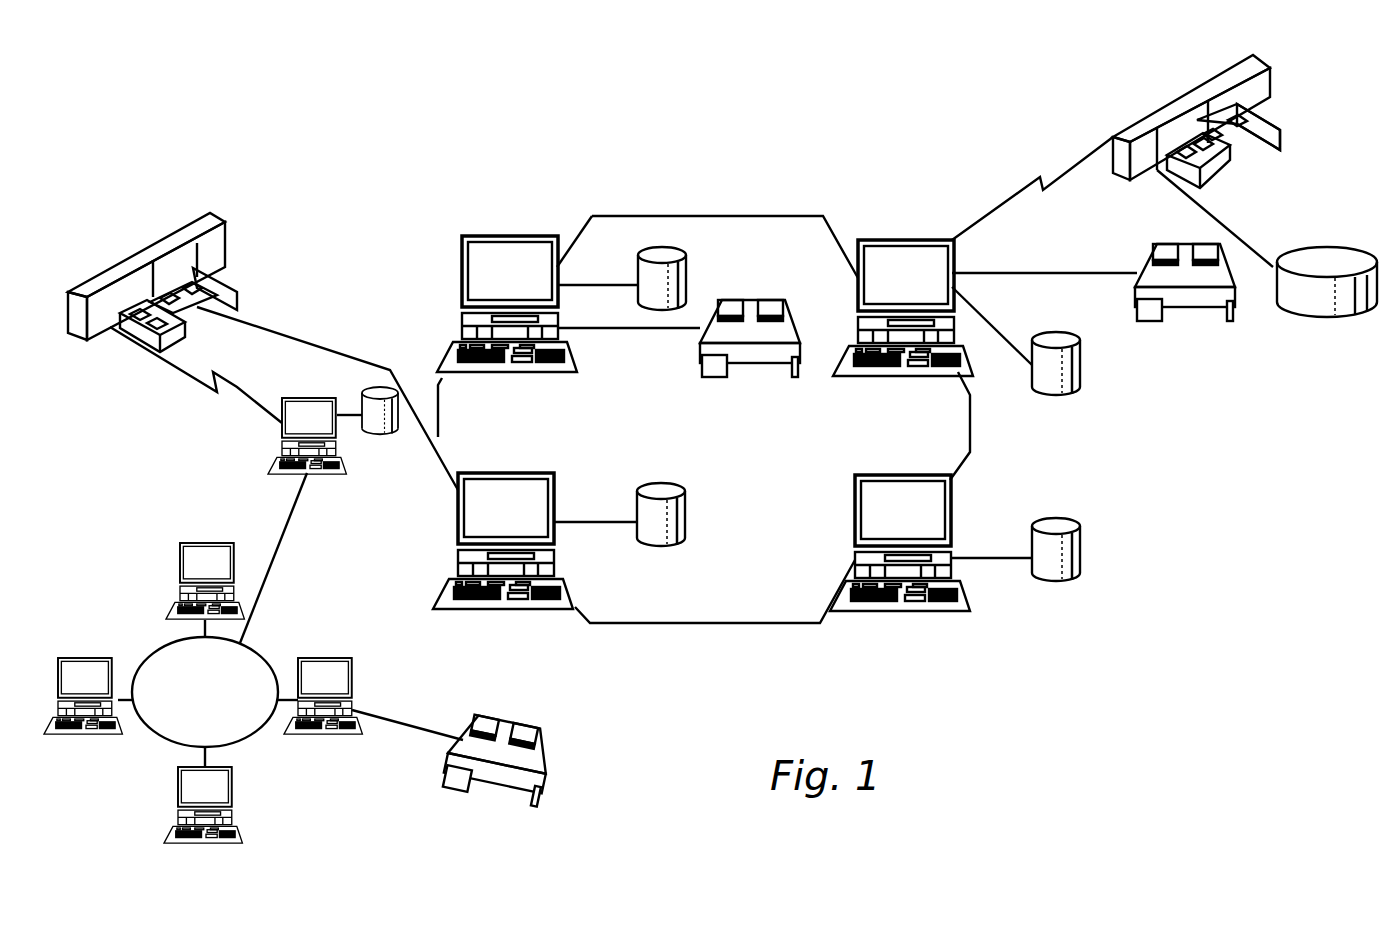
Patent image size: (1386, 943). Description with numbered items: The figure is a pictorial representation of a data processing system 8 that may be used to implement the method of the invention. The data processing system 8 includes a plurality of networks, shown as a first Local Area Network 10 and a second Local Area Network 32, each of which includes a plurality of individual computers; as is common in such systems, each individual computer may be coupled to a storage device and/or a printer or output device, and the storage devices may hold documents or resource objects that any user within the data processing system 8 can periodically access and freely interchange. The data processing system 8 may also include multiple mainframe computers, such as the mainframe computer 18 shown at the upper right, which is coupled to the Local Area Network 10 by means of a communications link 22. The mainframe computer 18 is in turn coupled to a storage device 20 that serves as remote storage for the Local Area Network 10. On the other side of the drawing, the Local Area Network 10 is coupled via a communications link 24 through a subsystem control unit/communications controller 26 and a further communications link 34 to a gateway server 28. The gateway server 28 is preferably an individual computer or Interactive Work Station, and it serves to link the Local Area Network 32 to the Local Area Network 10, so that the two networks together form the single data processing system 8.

The data processing system 8 is at (739, 172).
The local area network 10 is at (731, 623).
The mainframe computer 18 is at (1192, 95).
The storage device 20 is at (1350, 250).
The communications link 22 is at (1072, 165).
The communications link 24 is at (318, 346).
The subsystem control unit/communications controller 26 is at (228, 216).
The gateway server 28 is at (308, 398).
The local area network 32 is at (156, 740).
The communications link 34 is at (233, 400).